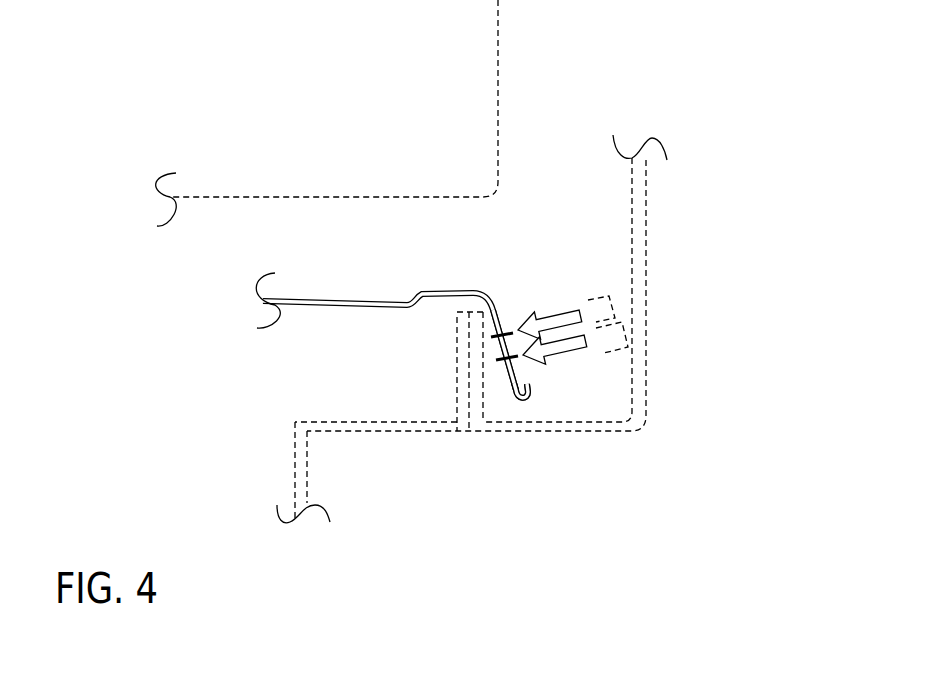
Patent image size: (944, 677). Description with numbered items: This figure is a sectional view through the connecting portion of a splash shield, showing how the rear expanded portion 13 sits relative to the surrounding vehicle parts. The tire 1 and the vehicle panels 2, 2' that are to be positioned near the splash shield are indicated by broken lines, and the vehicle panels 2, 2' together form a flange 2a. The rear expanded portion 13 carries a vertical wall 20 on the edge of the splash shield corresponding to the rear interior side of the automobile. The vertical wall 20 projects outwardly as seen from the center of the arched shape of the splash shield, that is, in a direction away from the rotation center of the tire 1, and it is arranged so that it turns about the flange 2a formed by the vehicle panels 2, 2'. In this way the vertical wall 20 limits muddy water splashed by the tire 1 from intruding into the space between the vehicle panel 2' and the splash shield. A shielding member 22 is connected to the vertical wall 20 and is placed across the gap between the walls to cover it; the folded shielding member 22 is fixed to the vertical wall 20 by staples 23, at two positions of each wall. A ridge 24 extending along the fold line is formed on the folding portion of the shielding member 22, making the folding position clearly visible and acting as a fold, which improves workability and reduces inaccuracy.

The tire 1 is at (453, 88).
The vehicle panel 2 is at (512, 283).
The vehicle panel 2' is at (236, 474).
The flange 2a is at (455, 347).
The rear expanded portion 13 is at (330, 310).
The vertical wall 20 is at (500, 368).
The shielding member 22 is at (511, 328).
The staples 23 is at (620, 320).
The ridge 24 is at (537, 395).